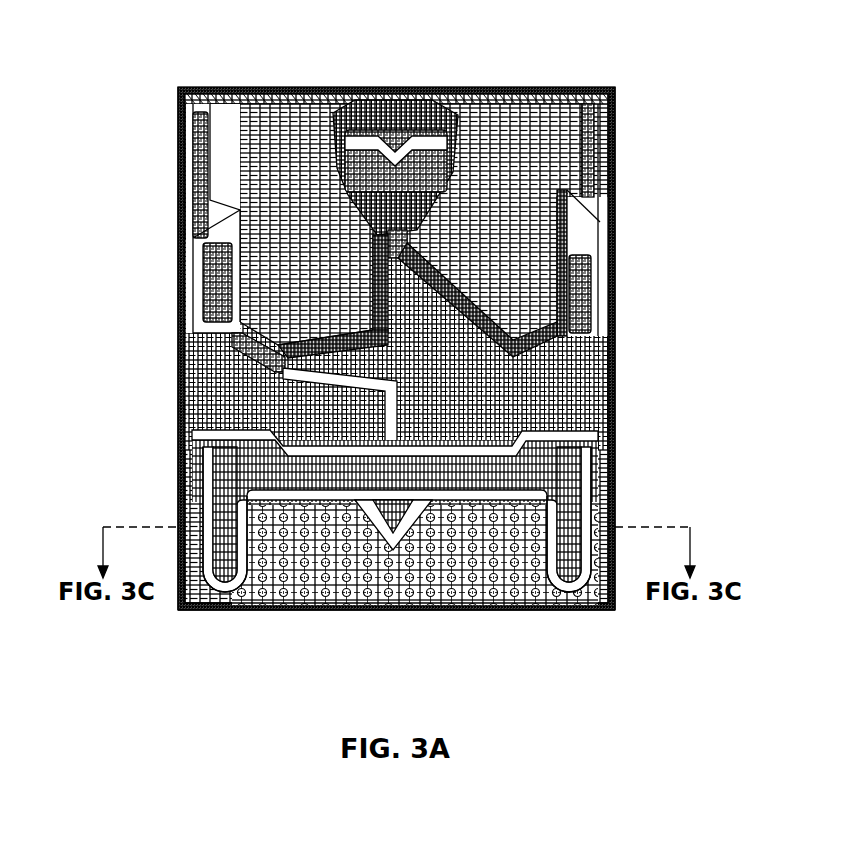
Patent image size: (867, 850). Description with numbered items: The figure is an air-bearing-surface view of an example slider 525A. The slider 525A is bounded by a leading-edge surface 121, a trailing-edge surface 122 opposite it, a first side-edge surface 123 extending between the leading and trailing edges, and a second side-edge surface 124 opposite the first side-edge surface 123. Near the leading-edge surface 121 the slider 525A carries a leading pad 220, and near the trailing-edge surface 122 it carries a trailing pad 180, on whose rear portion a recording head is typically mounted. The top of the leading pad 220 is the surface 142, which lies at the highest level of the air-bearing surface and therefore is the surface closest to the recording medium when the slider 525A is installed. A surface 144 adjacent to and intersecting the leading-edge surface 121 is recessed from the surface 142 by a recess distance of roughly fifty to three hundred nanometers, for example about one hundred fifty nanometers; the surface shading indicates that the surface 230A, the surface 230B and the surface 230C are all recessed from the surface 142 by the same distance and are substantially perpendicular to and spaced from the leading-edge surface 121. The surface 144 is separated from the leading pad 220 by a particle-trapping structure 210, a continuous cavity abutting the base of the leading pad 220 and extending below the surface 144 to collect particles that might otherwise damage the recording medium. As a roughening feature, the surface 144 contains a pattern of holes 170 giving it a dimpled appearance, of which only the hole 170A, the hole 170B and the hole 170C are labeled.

The slider 525A is at (168, 50).
The trailing-edge surface 122 is at (466, 88).
The trailing pad 180 is at (445, 96).
The surface 230A is at (192, 152).
The surface 230B is at (372, 160).
The surface 230C is at (598, 270).
The first side-edge surface 123 is at (178, 319).
The second side-edge surface 124 is at (617, 322).
The surface 142 is at (203, 455).
The particle-trapping structure 210 is at (565, 493).
The leading pad 220 is at (416, 500).
The hole 170B is at (266, 604).
The leading-edge surface 121 is at (326, 616).
The holes 170 is at (366, 626).
The hole 170A is at (393, 604).
The surface 144 is at (470, 600).
The hole 170C is at (517, 604).